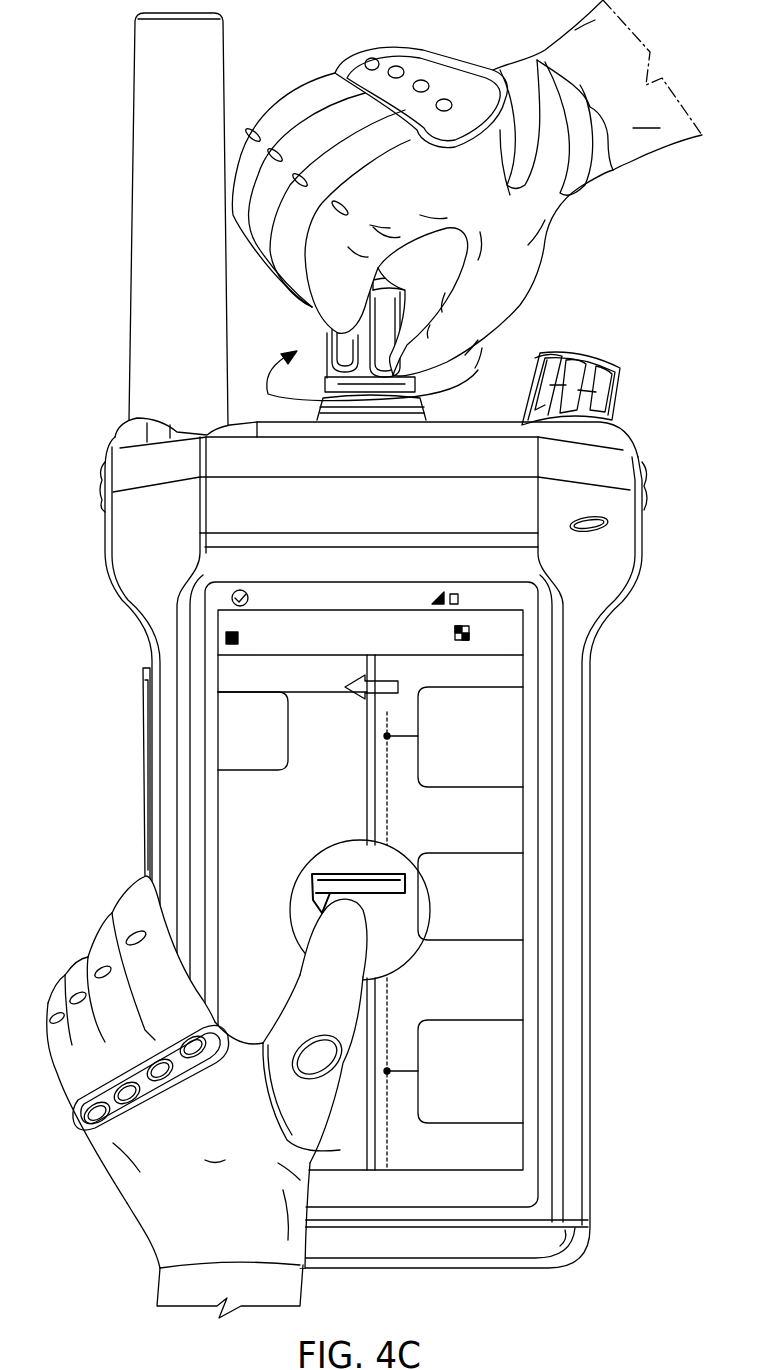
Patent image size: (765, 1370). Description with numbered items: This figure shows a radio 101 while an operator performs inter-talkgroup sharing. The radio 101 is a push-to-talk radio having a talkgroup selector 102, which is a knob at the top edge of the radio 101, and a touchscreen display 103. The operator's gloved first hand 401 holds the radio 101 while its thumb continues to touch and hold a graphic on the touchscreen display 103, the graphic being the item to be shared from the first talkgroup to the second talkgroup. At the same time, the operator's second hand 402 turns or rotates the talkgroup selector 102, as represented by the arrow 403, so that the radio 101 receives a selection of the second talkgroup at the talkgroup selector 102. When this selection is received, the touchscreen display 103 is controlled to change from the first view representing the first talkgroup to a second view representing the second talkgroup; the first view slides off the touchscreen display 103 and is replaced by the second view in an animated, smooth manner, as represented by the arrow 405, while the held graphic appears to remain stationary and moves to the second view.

The radio 101 is at (583, 1251).
The talkgroup selector 102 is at (391, 269).
The touchscreen display 103 is at (477, 1200).
The first hand 401 is at (130, 1204).
The second hand 402 is at (297, 87).
The arrow 403 is at (466, 362).
The arrow 405 is at (347, 688).